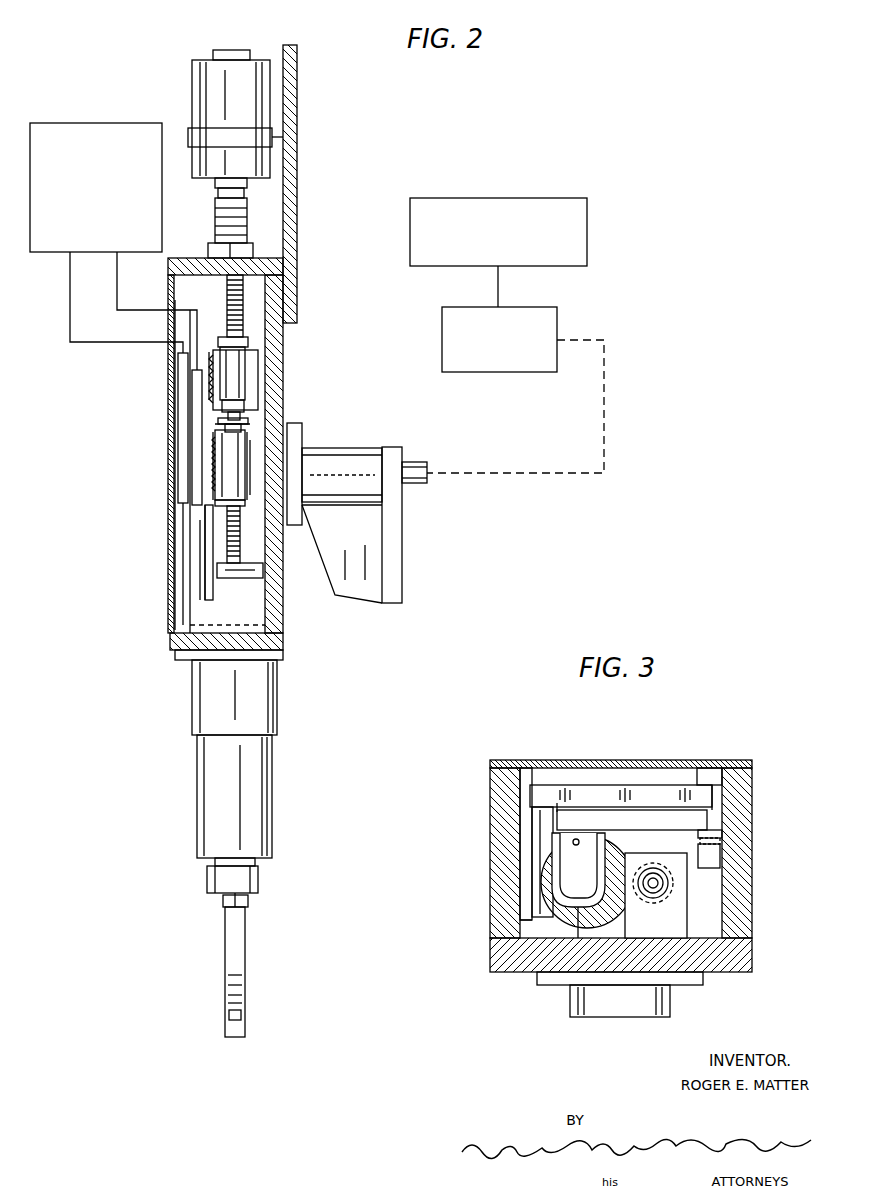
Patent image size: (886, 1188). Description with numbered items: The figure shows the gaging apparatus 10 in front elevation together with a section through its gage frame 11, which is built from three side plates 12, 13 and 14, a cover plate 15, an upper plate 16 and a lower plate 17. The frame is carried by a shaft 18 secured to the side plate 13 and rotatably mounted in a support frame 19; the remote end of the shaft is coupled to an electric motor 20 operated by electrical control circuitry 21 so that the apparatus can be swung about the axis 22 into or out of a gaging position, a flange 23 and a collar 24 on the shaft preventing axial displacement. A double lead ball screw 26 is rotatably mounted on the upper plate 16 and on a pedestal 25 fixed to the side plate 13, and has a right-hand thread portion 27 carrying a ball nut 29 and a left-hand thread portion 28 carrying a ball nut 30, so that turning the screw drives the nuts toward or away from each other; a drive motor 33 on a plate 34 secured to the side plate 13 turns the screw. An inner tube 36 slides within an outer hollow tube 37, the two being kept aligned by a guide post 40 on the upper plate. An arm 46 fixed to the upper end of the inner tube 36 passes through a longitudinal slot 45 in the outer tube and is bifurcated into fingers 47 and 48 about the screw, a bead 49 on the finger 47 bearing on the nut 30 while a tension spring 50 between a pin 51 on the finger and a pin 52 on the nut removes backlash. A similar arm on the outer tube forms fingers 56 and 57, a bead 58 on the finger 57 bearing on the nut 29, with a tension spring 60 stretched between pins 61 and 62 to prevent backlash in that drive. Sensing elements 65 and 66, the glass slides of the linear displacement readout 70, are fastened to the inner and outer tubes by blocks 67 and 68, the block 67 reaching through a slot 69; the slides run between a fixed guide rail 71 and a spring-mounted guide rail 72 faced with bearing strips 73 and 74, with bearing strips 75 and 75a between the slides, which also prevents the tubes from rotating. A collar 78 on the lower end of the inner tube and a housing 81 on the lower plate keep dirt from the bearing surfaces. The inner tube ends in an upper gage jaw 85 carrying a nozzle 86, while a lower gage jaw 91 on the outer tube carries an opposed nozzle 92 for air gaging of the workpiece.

In FIG. 2, the gaging apparatus 10 is at (130, 385).
In FIG. 3, the gage frame 11 is at (635, 987).
In FIG. 3, the side plate 12 is at (490, 875).
In FIG. 2, the side plate 13 is at (283, 640).
In FIG. 3, the side plate 13 is at (505, 972).
In FIG. 3, the side plate 14 is at (752, 892).
In FIG. 2, the cover plate 15 is at (172, 612).
In FIG. 3, the cover plate 15 is at (538, 762).
In FIG. 2, the upper plate 16 is at (270, 264).
In FIG. 2, the lower plate 17 is at (282, 655).
In FIG. 2, the shaft 18 is at (395, 515).
In FIG. 2, the support frame 19 is at (328, 570).
In FIG. 2, the electric motor 20 is at (442, 322).
In FIG. 2, the electrical control circuitry 21 is at (482, 198).
In FIG. 2, the axis 22 is at (345, 480).
In FIG. 2, the flange 23 is at (312, 506).
In FIG. 2, the collar 24 is at (412, 484).
In FIG. 2, the pedestal 25 is at (270, 595).
In FIG. 3, the pedestal 25 is at (700, 938).
In FIG. 2, the double lead ball screw 26 is at (220, 252).
In FIG. 2, the right-hand thread portion 27 is at (243, 300).
In FIG. 2, the left-hand thread portion 28 is at (236, 578).
In FIG. 2, the ball nut 29 is at (258, 380).
In FIG. 2, the ball nut 30 is at (246, 465).
In FIG. 2, the drive motor 33 is at (190, 97).
In FIG. 2, the plate 34 is at (297, 105).
In FIG. 3, the inner tube 36 is at (583, 912).
In FIG. 3, the outer hollow tube 37 is at (552, 928).
In FIG. 2, the guide post 40 is at (248, 341).
In FIG. 2, the longitudinal slot 45 is at (240, 528).
In FIG. 3, the arm 46 is at (622, 912).
In FIG. 2, the finger 47 is at (226, 430).
In FIG. 2, the finger 48 is at (302, 428).
In FIG. 2, the bead 49 is at (222, 452).
In FIG. 2, the tension spring 50 is at (224, 472).
In FIG. 2, the pin 51 is at (214, 440).
In FIG. 2, the pin 52 is at (216, 505).
In FIG. 2, the finger 56 is at (246, 406).
In FIG. 2, the finger 57 is at (222, 424).
In FIG. 2, the bead 58 is at (230, 410).
In FIG. 2, the tension spring 60 is at (250, 360).
In FIG. 2, the pin 61 is at (216, 352).
In FIG. 2, the pin 62 is at (220, 421).
In FIG. 2, the sensing element 65 is at (202, 528).
In FIG. 3, the sensing element 65 is at (688, 840).
In FIG. 2, the sensing element 66 is at (190, 582).
In FIG. 3, the sensing element 66 is at (575, 783).
In FIG. 2, the block 67 is at (205, 555).
In FIG. 3, the block 67 is at (557, 842).
In FIG. 2, the block 68 is at (186, 625).
In FIG. 3, the block 68 is at (540, 818).
In FIG. 3, the slot 69 is at (582, 840).
In FIG. 2, the linear displacement readout 70 is at (68, 123).
In FIG. 3, the guide rail 71 is at (705, 775).
In FIG. 3, the guide rail 72 is at (712, 848).
In FIG. 3, the bearing strip 73 is at (716, 782).
In FIG. 3, the bearing strip 74 is at (715, 835).
In FIG. 3, the bearing strip 75 is at (707, 815).
In FIG. 3, the bearing strip 75a is at (560, 806).
In FIG. 2, the collar 78 is at (272, 790).
In FIG. 2, the housing 81 is at (277, 698).
In FIG. 2, the upper gage jaw 85 is at (252, 900).
In FIG. 2, the nozzle 86 is at (223, 900).
In FIG. 2, the lower gage jaw 91 is at (247, 995).
In FIG. 2, the nozzle 92 is at (229, 1015).